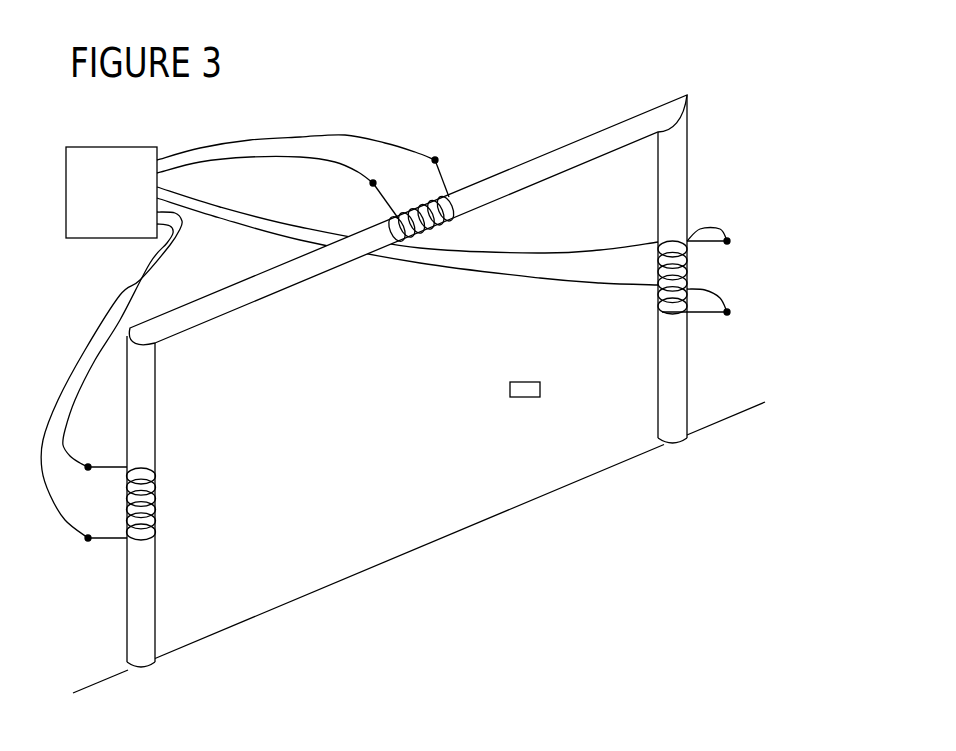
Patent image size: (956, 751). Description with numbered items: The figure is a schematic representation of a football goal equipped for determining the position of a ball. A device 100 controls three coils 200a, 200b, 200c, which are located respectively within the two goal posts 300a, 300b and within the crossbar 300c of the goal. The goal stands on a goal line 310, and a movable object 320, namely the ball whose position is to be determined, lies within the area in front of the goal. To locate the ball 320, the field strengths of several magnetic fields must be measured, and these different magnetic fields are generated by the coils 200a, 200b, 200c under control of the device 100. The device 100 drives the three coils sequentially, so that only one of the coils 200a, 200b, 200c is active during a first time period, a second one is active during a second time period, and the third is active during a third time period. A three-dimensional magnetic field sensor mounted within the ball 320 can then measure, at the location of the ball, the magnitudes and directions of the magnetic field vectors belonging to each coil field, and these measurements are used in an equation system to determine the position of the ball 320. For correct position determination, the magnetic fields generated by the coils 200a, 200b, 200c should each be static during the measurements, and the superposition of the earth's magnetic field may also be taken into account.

The device for controlling the coils 100 is at (82, 238).
The coil 200a is at (117, 540).
The coil 200b is at (685, 273).
The coil 200c is at (428, 203).
The goal post 300a is at (127, 605).
The goal post 300b is at (687, 377).
The crossbar 300c is at (540, 157).
The goal line 310 is at (733, 414).
The movable object 320 is at (540, 387).